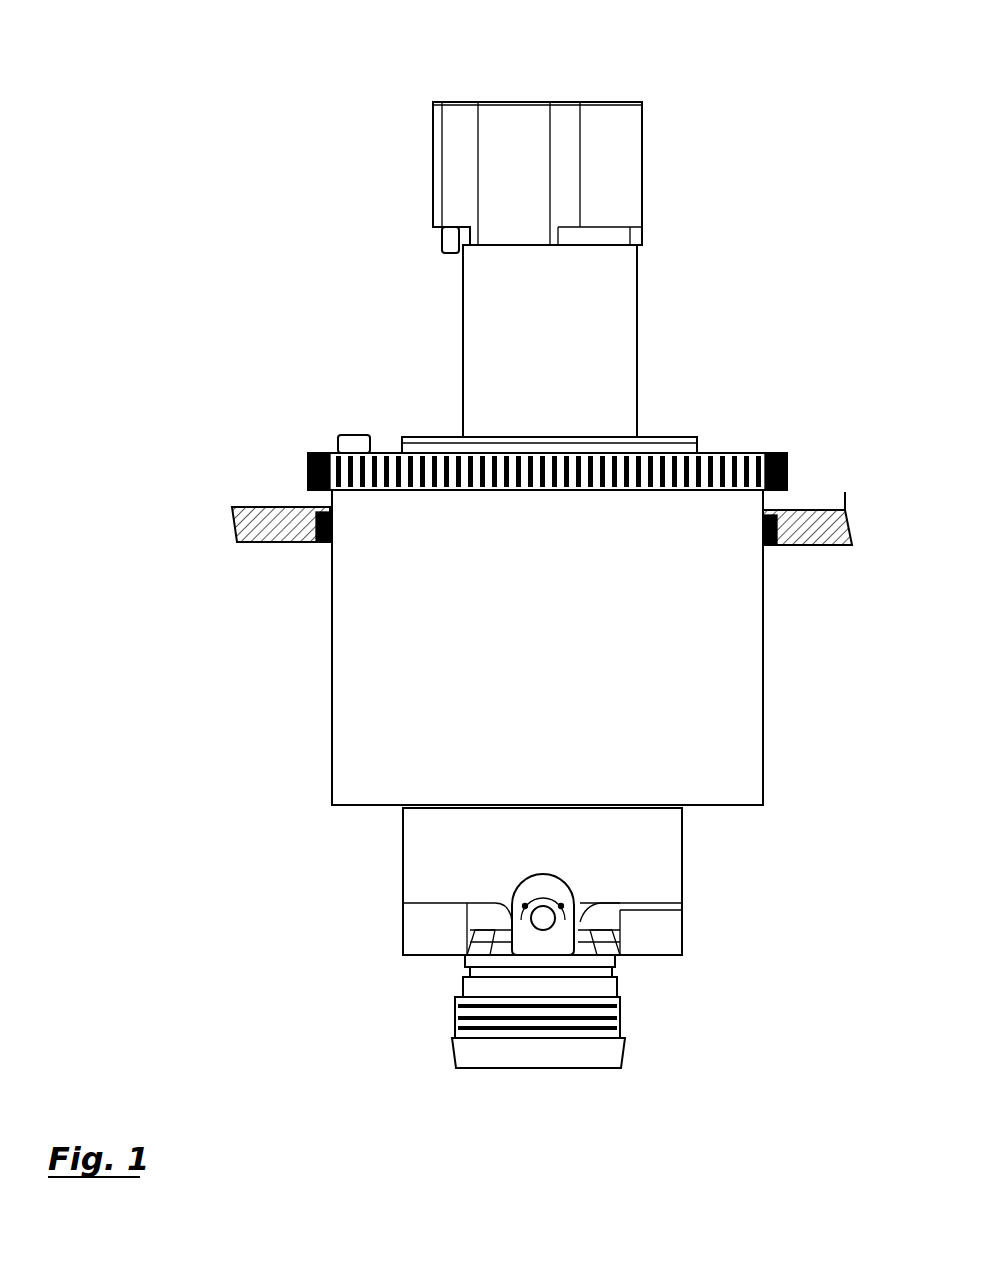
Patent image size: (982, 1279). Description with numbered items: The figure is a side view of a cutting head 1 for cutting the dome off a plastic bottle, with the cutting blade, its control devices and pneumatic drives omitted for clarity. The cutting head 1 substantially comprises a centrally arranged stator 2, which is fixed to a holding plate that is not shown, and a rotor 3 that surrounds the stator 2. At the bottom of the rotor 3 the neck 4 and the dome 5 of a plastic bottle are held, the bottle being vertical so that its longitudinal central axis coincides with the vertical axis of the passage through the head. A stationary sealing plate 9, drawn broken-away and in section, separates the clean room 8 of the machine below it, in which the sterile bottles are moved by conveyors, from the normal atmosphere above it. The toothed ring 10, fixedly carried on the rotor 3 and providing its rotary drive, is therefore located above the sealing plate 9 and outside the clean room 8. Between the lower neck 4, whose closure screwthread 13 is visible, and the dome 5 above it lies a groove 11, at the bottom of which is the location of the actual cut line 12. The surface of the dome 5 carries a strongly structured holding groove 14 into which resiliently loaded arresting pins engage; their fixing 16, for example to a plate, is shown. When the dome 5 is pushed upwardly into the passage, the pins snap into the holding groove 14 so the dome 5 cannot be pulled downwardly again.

The cutting head 1 is at (285, 192).
The stator 2 is at (618, 303).
The rotor 3 is at (725, 730).
The neck 4 is at (605, 1055).
The dome 5 is at (590, 920).
The clean room 8 is at (195, 851).
The sealing plate 9 is at (232, 512).
The toothed ring 10 is at (712, 458).
The groove 11 is at (470, 967).
The cut line 12 is at (605, 978).
The closure screwthread 13 is at (463, 1005).
The holding groove 14 is at (475, 945).
The fixing 16 is at (576, 908).